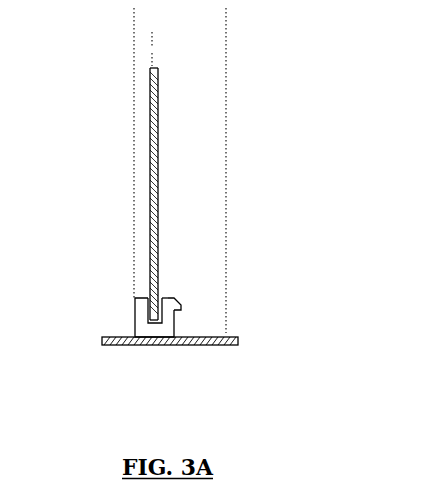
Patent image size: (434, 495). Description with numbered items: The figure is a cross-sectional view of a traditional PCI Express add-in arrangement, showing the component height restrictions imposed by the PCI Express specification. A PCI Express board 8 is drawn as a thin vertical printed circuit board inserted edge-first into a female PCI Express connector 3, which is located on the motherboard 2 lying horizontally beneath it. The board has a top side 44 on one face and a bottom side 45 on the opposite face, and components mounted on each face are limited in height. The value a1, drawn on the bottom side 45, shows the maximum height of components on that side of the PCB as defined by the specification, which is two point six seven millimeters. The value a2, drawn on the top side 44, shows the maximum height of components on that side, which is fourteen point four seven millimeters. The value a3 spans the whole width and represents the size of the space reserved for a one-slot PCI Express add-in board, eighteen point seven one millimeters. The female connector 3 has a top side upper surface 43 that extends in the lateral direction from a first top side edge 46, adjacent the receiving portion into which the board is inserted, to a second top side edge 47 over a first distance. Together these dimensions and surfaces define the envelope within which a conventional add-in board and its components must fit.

The motherboard 2 is at (192, 345).
The female PCI Express connector 3 is at (140, 312).
The PCI Express board 8 is at (150, 235).
The top side upper surface 43 is at (163, 290).
The top side 44 is at (160, 122).
The bottom side 45 is at (148, 127).
The first top side edge 46 is at (162, 296).
The second top side edge 47 is at (176, 291).
The maximum bottom side component height a1 is at (173, 50).
The maximum top side component height a2 is at (158, 167).
The one-slot reserved space size a3 is at (226, 15).